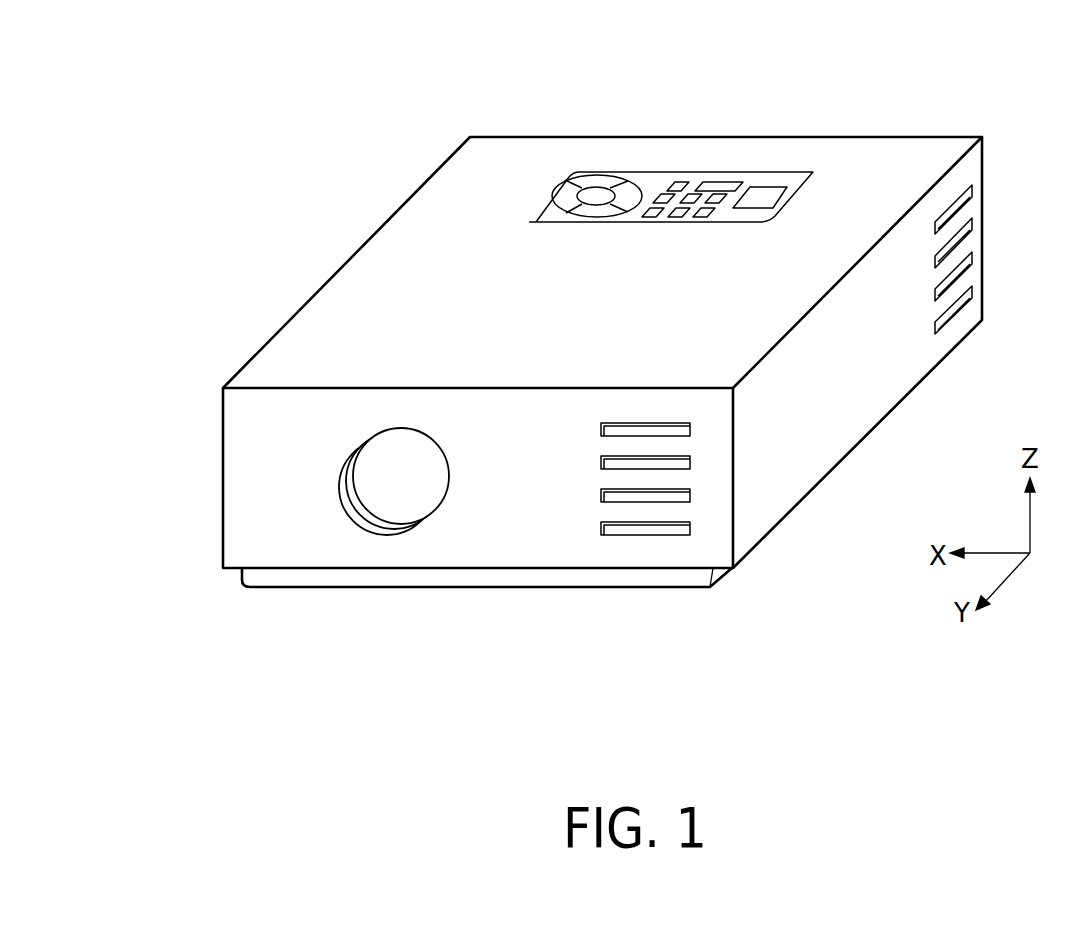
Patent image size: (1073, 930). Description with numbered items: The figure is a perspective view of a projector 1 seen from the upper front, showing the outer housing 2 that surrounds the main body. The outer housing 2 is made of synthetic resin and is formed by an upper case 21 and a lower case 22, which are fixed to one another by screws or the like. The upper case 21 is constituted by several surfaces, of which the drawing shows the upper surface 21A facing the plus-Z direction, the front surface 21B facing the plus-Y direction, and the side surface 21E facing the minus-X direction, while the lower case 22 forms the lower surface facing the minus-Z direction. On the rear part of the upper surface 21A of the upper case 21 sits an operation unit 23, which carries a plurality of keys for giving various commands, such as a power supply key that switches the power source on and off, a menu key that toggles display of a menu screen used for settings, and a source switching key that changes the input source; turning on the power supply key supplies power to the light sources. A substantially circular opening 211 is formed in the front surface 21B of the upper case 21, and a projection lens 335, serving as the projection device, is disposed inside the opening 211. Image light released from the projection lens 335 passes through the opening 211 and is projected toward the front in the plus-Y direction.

The projector 1 is at (585, 346).
The outer housing 2 is at (556, 362).
The upper case 21 is at (556, 362).
The upper surface 21A is at (602, 222).
The front surface 21B is at (432, 527).
The side surface 21E is at (868, 398).
The lower case 22 is at (680, 577).
The operation unit 23 is at (655, 182).
The opening 211 is at (372, 547).
The projection lens 335 is at (392, 493).